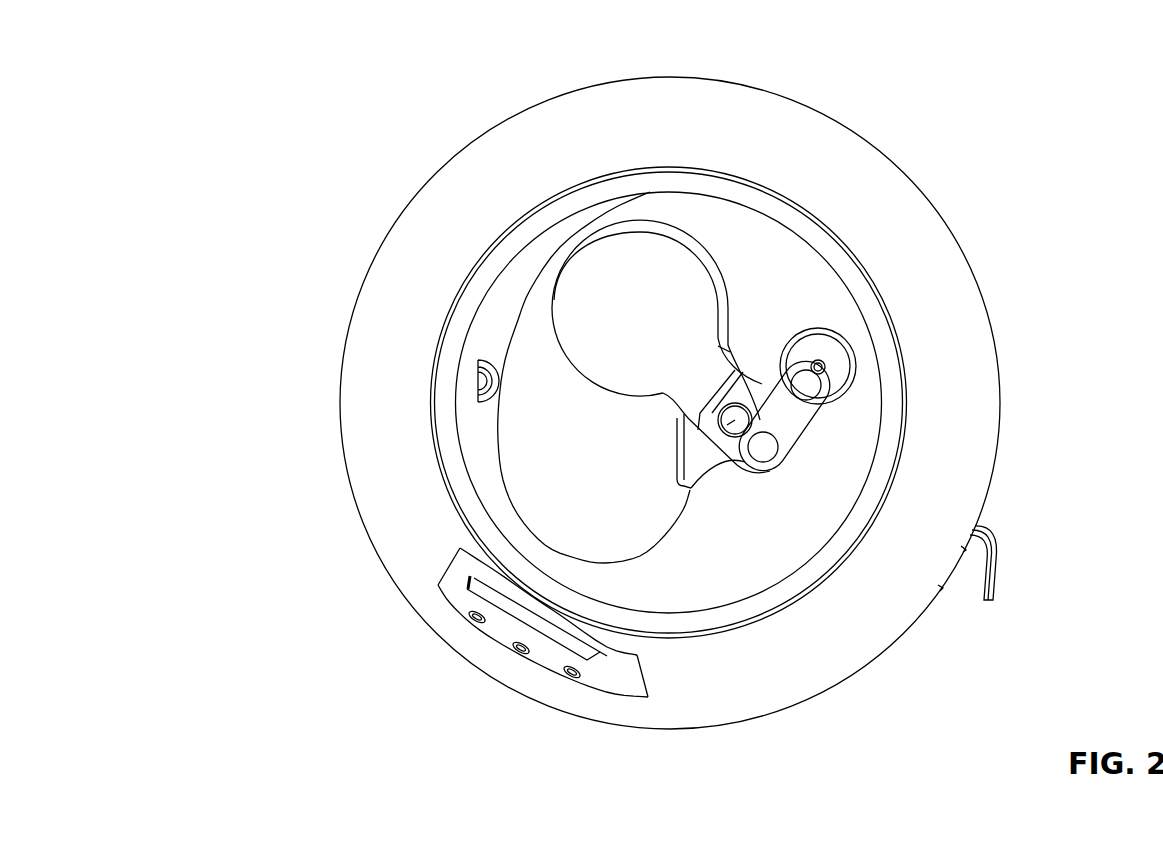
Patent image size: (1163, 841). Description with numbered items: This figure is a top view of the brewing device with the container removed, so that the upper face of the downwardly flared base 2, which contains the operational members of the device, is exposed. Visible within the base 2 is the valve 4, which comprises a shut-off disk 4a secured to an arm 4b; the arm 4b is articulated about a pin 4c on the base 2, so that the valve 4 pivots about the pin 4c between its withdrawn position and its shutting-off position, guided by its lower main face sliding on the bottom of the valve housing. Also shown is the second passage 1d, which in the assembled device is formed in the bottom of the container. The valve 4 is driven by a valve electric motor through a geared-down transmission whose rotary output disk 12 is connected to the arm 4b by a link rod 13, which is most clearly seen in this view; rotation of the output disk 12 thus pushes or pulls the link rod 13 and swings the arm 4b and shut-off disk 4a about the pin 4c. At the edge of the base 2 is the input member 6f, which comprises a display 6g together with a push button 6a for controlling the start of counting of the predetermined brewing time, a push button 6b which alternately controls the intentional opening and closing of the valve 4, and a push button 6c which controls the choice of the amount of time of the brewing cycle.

The base 2 is at (847, 638).
The second passage 1d is at (477, 388).
The valve 4 is at (664, 274).
The shut-off disk 4a is at (690, 307).
The arm 4b is at (685, 385).
The pin 4c is at (726, 437).
The push button 6a is at (520, 650).
The push button 6b is at (571, 673).
The push button 6c is at (476, 618).
The input member 6f is at (648, 697).
The display 6g is at (587, 660).
The rotary output disk 12 is at (840, 358).
The link rod 13 is at (784, 419).